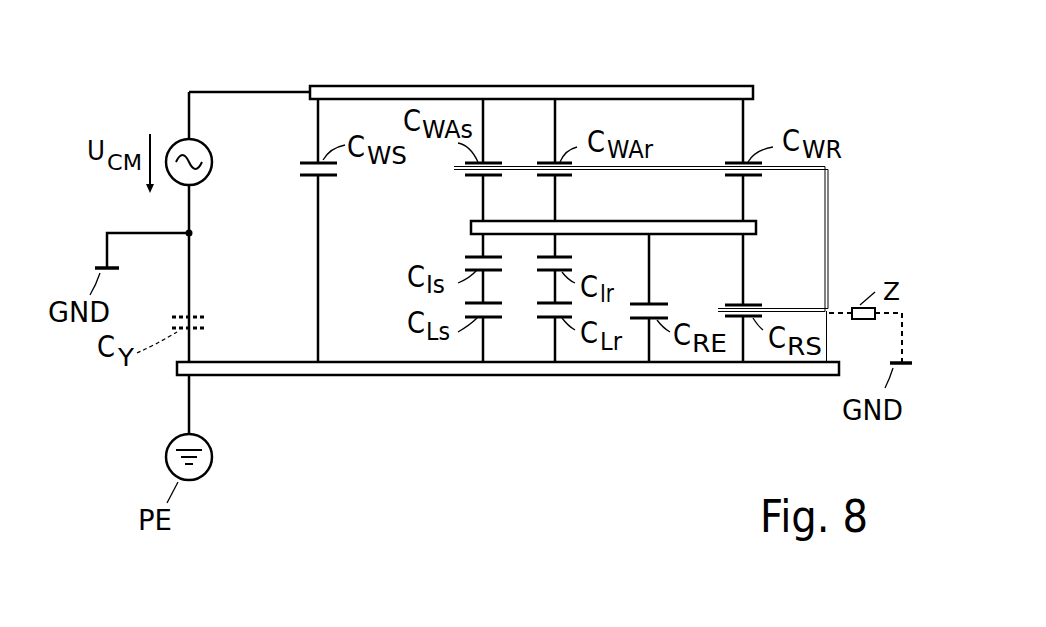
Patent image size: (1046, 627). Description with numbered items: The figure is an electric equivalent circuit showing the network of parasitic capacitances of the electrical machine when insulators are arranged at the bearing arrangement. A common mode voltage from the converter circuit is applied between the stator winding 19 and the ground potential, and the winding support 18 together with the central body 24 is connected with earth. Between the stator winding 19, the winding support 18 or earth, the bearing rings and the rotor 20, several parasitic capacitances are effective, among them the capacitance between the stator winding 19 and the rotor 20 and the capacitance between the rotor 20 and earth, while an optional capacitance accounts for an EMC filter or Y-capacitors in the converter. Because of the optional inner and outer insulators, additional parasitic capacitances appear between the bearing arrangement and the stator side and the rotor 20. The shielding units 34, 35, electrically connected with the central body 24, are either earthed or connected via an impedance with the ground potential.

The stator winding 19 is at (418, 92).
The rotor 20 is at (582, 226).
The winding support 18 is at (508, 412).
The central body 24 is at (388, 375).
The shielding unit 34 is at (699, 265).
The shielding unit 35 is at (825, 230).